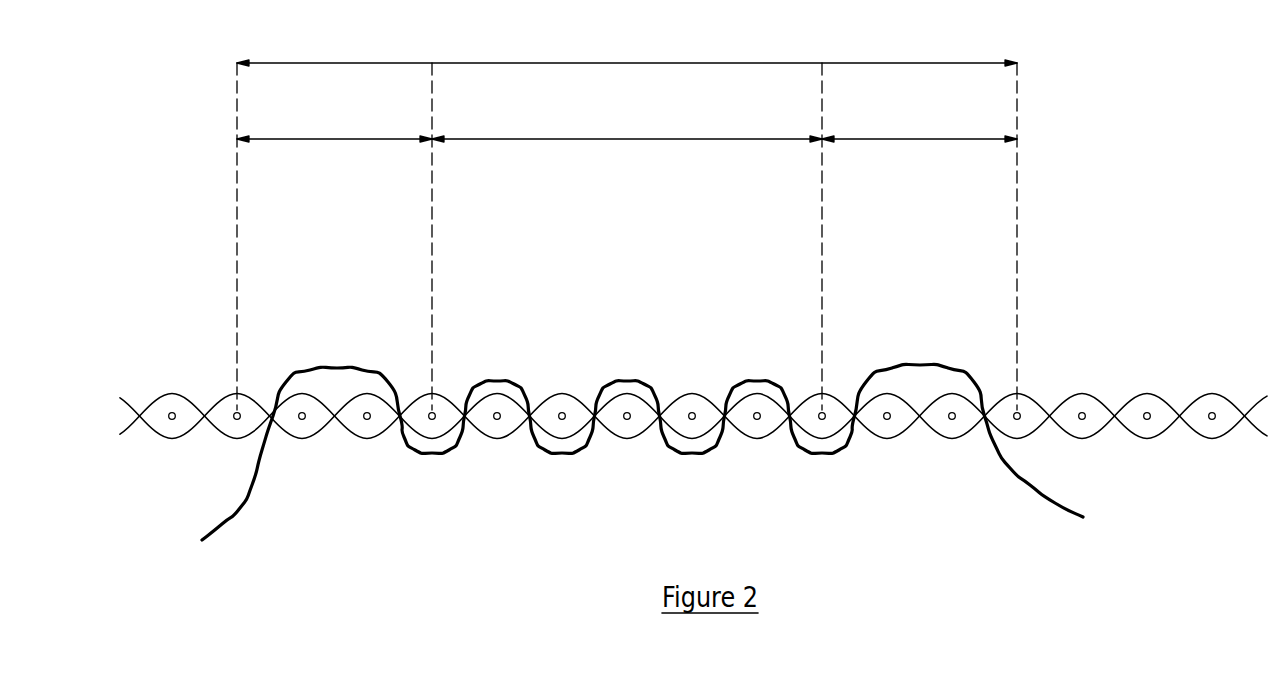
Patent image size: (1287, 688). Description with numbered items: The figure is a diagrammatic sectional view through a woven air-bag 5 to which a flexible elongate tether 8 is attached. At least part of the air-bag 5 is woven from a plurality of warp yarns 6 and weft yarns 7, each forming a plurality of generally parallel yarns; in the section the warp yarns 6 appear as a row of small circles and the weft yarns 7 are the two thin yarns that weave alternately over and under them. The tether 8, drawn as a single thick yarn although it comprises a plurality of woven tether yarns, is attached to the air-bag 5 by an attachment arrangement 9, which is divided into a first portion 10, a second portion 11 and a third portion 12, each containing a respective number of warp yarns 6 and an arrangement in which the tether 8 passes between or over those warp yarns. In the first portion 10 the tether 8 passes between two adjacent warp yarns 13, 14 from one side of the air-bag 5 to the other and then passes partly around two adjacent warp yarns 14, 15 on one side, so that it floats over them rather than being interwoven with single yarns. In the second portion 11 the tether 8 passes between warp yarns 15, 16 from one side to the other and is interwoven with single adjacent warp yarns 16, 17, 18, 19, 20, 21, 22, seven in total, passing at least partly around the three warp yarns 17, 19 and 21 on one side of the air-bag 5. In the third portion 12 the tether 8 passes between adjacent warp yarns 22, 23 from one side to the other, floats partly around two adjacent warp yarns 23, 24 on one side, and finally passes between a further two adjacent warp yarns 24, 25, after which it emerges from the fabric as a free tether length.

The air-bag 5 is at (438, 573).
The warp yarns 6 is at (172, 410).
The weft yarns 7 is at (135, 380).
The tether 8 is at (236, 512).
The attachment arrangement 9 is at (627, 52).
The first portion 10 is at (334, 129).
The second portion 11 is at (627, 127).
The third portion 12 is at (919, 128).
The warp yarn 13 is at (237, 410).
The warp yarn 14 is at (302, 422).
The warp yarn 15 is at (368, 422).
The warp yarn 16 is at (435, 410).
The warp yarn 17 is at (496, 422).
The warp yarn 18 is at (563, 410).
The warp yarn 19 is at (626, 422).
The warp yarn 20 is at (696, 410).
The warp yarn 21 is at (756, 422).
The warp yarn 22 is at (827, 410).
The warp yarn 23 is at (886, 422).
The warp yarn 24 is at (951, 422).
The warp yarn 25 is at (1025, 410).